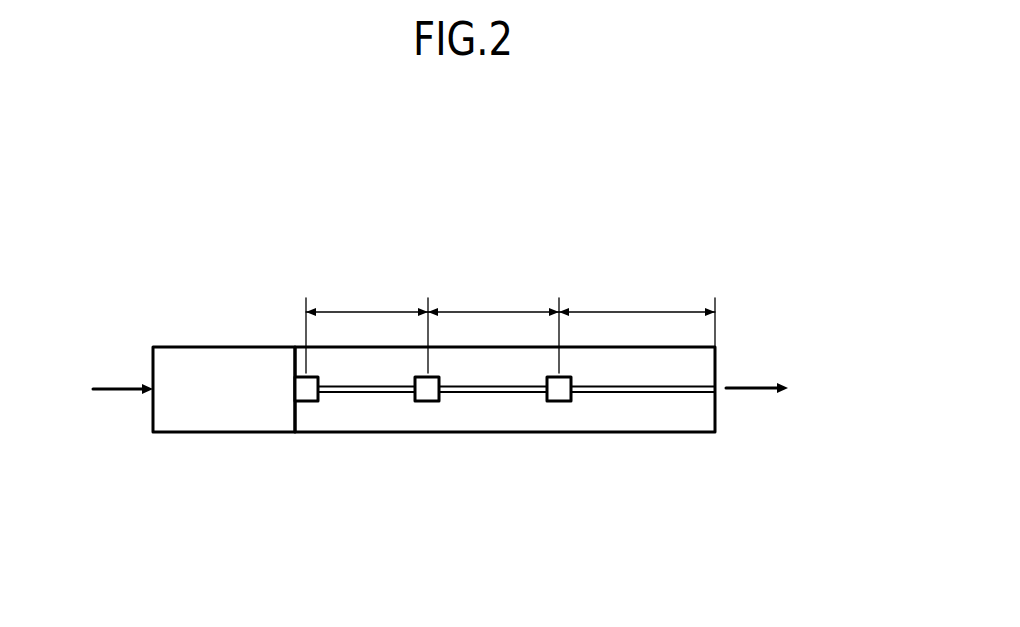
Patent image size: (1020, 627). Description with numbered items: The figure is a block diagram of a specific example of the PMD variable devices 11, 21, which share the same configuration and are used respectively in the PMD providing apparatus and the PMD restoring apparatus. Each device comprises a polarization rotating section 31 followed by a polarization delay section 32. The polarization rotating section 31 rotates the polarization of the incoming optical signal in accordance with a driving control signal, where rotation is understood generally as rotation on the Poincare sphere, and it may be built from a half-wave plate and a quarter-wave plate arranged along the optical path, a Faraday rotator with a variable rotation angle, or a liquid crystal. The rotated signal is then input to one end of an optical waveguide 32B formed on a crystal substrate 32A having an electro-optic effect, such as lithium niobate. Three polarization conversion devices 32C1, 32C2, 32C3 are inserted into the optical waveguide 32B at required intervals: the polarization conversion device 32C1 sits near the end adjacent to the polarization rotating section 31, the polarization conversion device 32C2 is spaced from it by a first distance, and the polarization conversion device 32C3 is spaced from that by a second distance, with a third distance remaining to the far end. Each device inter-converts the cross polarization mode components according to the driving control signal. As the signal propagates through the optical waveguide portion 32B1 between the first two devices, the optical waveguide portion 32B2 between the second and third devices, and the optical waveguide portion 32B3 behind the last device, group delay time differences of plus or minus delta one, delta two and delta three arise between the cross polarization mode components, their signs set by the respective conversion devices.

The PMD variable device 11 is at (474, 366).
The PMD variable device 21 is at (682, 247).
The polarization rotating section 31 is at (208, 347).
The polarization delay section 32 is at (715, 492).
The crystal substrate 32A is at (716, 420).
The optical waveguide 32B is at (707, 376).
The optical waveguide portion 32B1 is at (370, 393).
The optical waveguide portion 32B2 is at (500, 393).
The optical waveguide portion 32B3 is at (642, 393).
The polarization conversion device 32C1 is at (300, 402).
The polarization conversion device 32C2 is at (421, 402).
The polarization conversion device 32C3 is at (558, 402).